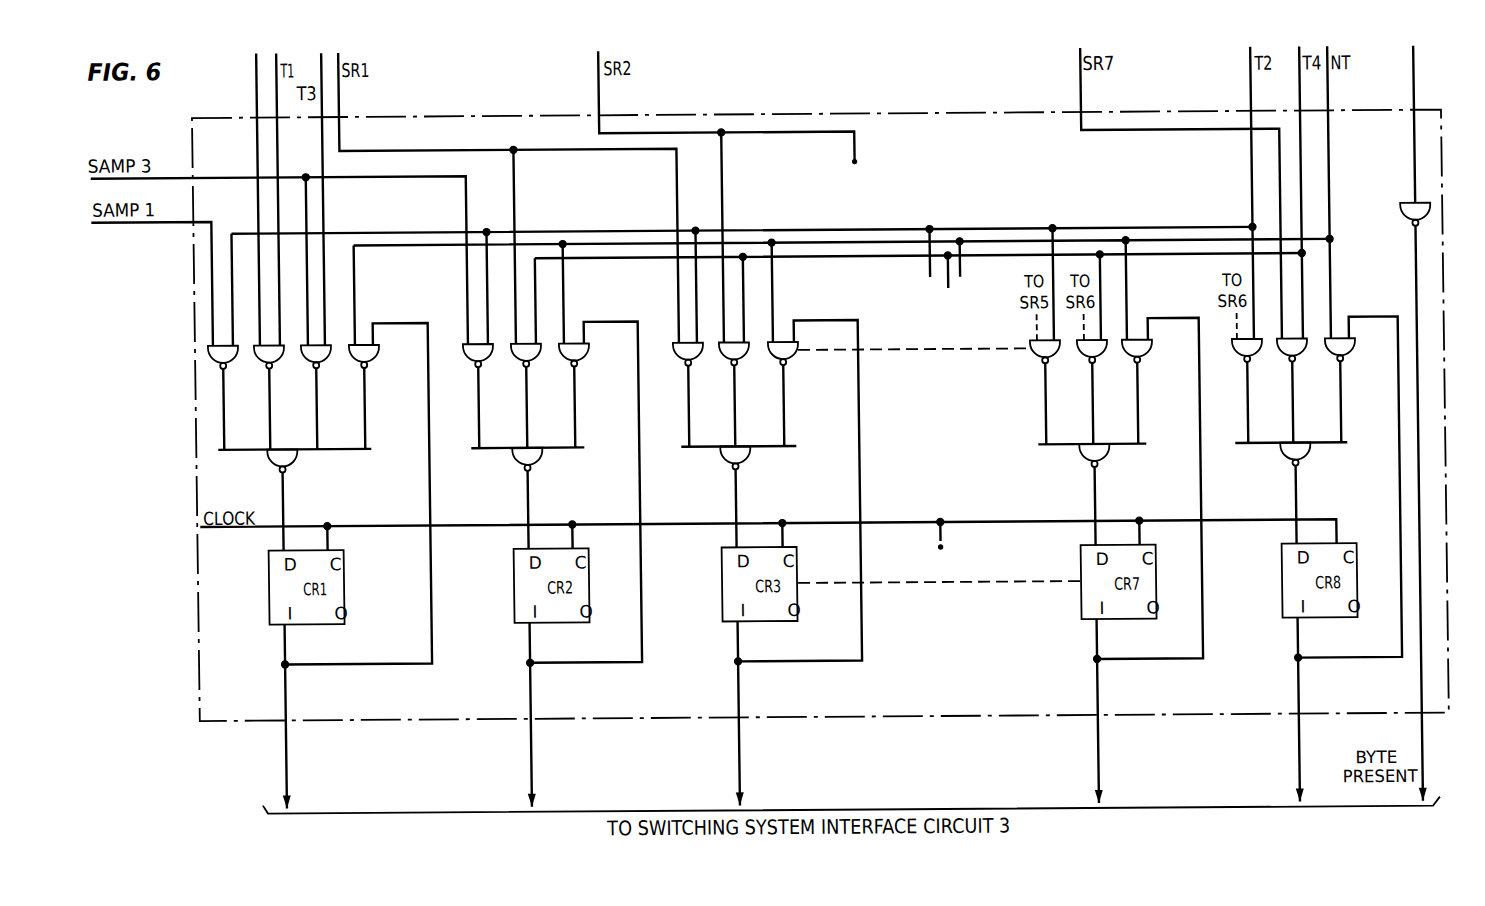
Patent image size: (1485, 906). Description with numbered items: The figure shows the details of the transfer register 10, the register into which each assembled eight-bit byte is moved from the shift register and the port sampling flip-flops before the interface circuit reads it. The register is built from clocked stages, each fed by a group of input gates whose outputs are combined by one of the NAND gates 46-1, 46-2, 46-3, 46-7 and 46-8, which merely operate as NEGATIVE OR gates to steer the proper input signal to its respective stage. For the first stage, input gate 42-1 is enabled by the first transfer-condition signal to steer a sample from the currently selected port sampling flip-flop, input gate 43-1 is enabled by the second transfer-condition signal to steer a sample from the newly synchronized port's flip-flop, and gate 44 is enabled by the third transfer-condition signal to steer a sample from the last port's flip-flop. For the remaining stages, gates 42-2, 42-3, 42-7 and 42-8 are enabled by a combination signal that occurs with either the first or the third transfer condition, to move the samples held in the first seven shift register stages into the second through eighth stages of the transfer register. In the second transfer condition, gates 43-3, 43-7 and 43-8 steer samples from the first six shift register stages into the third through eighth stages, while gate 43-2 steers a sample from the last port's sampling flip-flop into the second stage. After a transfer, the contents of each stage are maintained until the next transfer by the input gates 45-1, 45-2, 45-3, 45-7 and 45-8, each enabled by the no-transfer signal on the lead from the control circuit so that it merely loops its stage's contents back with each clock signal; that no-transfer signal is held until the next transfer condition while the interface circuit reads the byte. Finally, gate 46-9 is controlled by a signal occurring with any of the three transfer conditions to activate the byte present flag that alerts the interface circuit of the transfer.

The transfer register 10 is at (920, 123).
The input gate 42-1 is at (280, 362).
The input gate 43-1 is at (235, 363).
The gate 44 is at (323, 362).
The input gate 45-1 is at (377, 362).
The NAND gate 46-1 is at (295, 465).
The input gate 42-2 is at (538, 361).
The input gate 43-2 is at (464, 361).
The input gate 45-2 is at (591, 360).
The NAND gate 46-2 is at (543, 462).
The input gate 42-3 is at (721, 359).
The input gate 43-3 is at (672, 360).
The input gate 45-3 is at (797, 359).
The NAND gate 46-3 is at (751, 461).
The input gate 42-7 is at (1078, 356).
The input gate 43-7 is at (1030, 356).
The input gate 45-7 is at (1152, 353).
The NAND gate 46-7 is at (1110, 459).
The input gate 42-8 is at (1280, 354).
The input gate 43-8 is at (1232, 355).
The input gate 45-8 is at (1355, 352).
The NAND gate 46-8 is at (1311, 457).
The gate 46-9 is at (1396, 214).